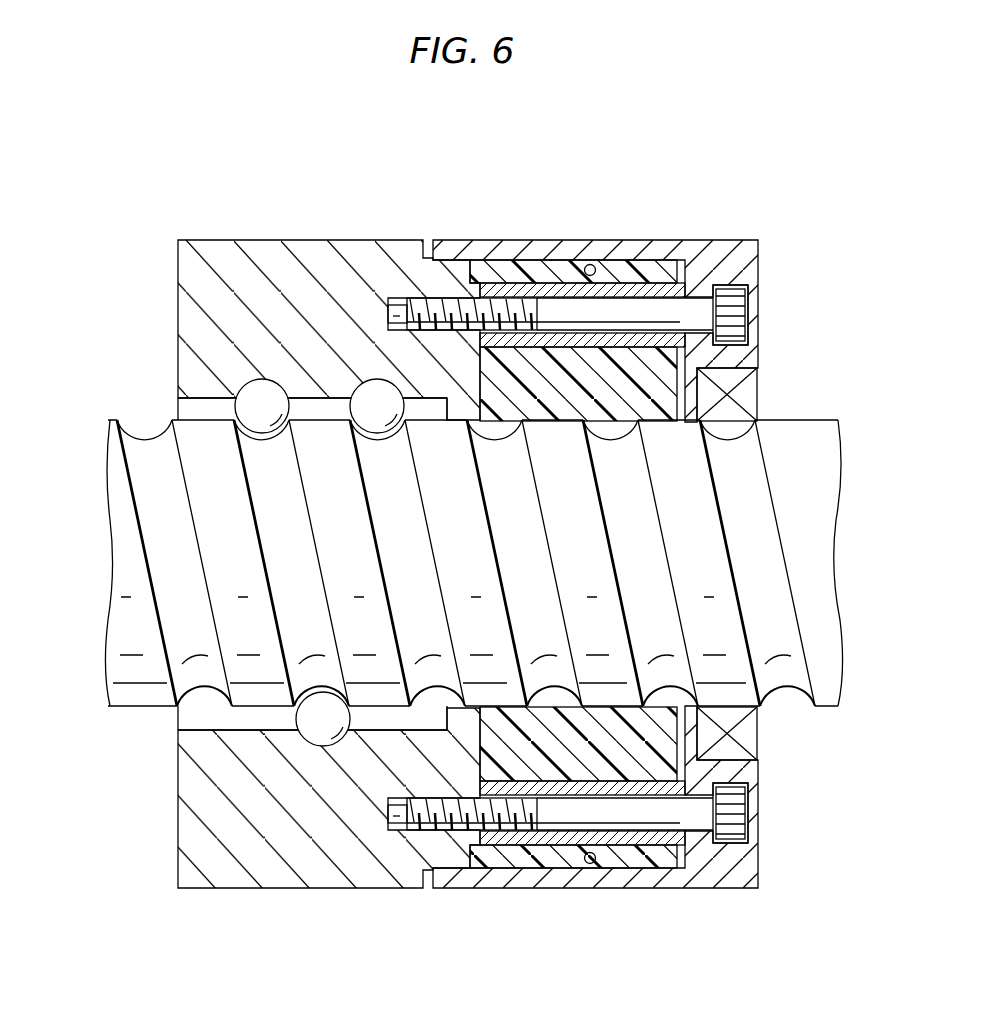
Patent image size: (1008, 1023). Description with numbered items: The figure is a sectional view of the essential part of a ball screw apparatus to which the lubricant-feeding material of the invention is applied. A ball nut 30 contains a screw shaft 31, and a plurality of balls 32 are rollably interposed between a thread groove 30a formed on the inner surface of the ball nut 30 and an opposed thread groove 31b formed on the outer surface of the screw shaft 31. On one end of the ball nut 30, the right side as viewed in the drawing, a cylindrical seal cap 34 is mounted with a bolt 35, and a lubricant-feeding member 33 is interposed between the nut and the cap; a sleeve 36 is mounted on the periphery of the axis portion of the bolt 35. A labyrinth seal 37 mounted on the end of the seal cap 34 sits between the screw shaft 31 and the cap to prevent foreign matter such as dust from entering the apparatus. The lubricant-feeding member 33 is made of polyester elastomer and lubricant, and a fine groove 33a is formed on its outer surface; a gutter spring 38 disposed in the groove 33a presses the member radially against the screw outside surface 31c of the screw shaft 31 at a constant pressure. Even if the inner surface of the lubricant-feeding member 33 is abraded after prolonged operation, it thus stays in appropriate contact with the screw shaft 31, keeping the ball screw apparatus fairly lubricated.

The ball nut 30 is at (291, 252).
The thread groove 30a is at (238, 412).
The screw shaft 31 is at (832, 442).
The thread groove 31b is at (660, 630).
The screw outside surface 31c is at (661, 424).
The balls 32 is at (243, 440).
The lubricant-feeding member 33 is at (497, 865).
The fine groove 33a is at (572, 250).
The cylindrical seal cap 34 is at (493, 250).
The bolt 35 is at (743, 280).
The sleeve 36 is at (653, 250).
The labyrinth seal 37 is at (752, 390).
The gutter spring 38 is at (595, 252).